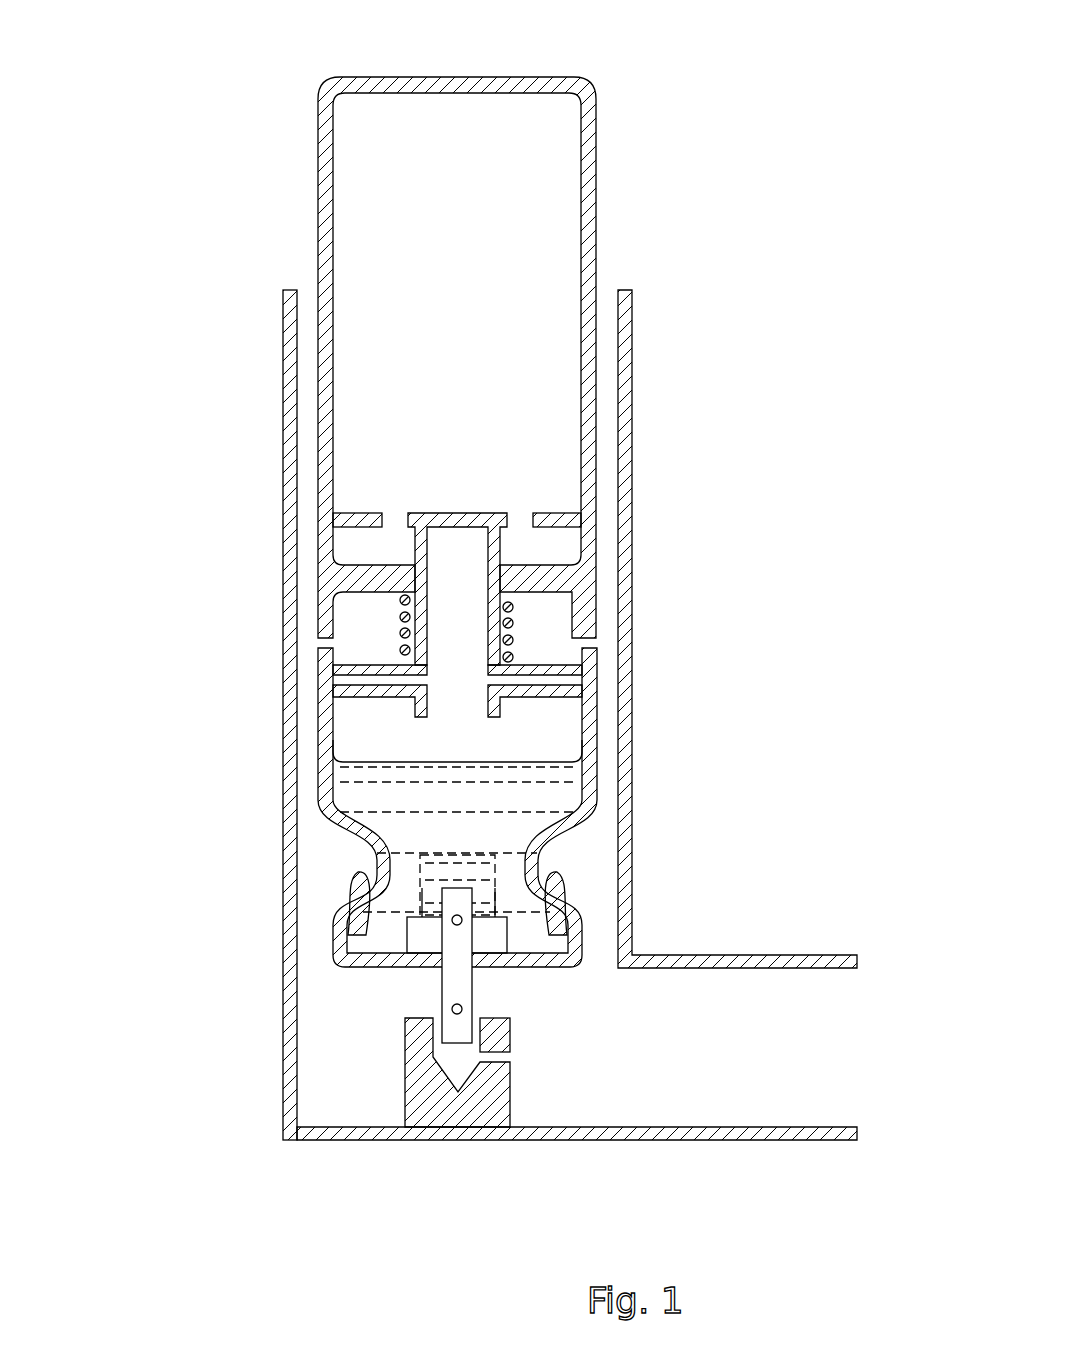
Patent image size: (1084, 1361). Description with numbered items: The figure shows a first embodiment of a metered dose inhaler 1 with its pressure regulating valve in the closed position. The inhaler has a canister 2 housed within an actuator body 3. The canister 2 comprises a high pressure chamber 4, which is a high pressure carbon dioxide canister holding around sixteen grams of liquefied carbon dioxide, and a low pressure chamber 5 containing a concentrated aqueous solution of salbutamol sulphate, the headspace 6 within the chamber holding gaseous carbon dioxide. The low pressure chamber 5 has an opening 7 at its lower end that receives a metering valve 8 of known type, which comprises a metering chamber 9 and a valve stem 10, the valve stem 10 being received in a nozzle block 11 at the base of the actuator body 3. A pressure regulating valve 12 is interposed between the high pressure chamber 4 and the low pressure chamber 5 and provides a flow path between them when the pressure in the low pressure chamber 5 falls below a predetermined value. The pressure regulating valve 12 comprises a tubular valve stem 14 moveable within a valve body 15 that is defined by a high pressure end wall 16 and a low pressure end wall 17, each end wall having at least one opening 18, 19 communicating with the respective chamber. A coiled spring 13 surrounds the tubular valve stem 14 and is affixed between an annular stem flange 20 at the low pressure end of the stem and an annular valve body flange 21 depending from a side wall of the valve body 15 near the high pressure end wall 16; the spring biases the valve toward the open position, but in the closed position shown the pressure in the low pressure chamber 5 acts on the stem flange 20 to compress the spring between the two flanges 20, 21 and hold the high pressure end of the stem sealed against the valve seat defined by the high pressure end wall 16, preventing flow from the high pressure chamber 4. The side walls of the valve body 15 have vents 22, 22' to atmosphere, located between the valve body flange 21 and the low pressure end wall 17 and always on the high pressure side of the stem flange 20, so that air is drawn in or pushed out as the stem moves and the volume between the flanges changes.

The metered dose inhaler 1 is at (740, 327).
The canister 2 is at (301, 99).
The actuator body 3 is at (597, 646).
The high pressure chamber 4 is at (467, 266).
The low pressure chamber 5 is at (540, 793).
The headspace 6 is at (540, 718).
The opening 7 is at (382, 945).
The metering valve 8 is at (512, 885).
The metering chamber 9 is at (420, 870).
The valve stem 10 is at (452, 985).
The nozzle block 11 is at (420, 1075).
The pressure regulating valve 12 is at (296, 590).
The coiled spring 13 is at (399, 633).
The tubular valve stem 14 is at (410, 547).
The valve body 15 is at (383, 626).
The high pressure end wall 16 is at (544, 511).
The low pressure end wall 17 is at (365, 698).
The opening 18 is at (519, 517).
The opening 19 is at (440, 702).
The annular stem flange 20 is at (345, 679).
The annular valve body flange 21 is at (524, 578).
The vent 22 is at (346, 682).
The vent 22' is at (660, 598).